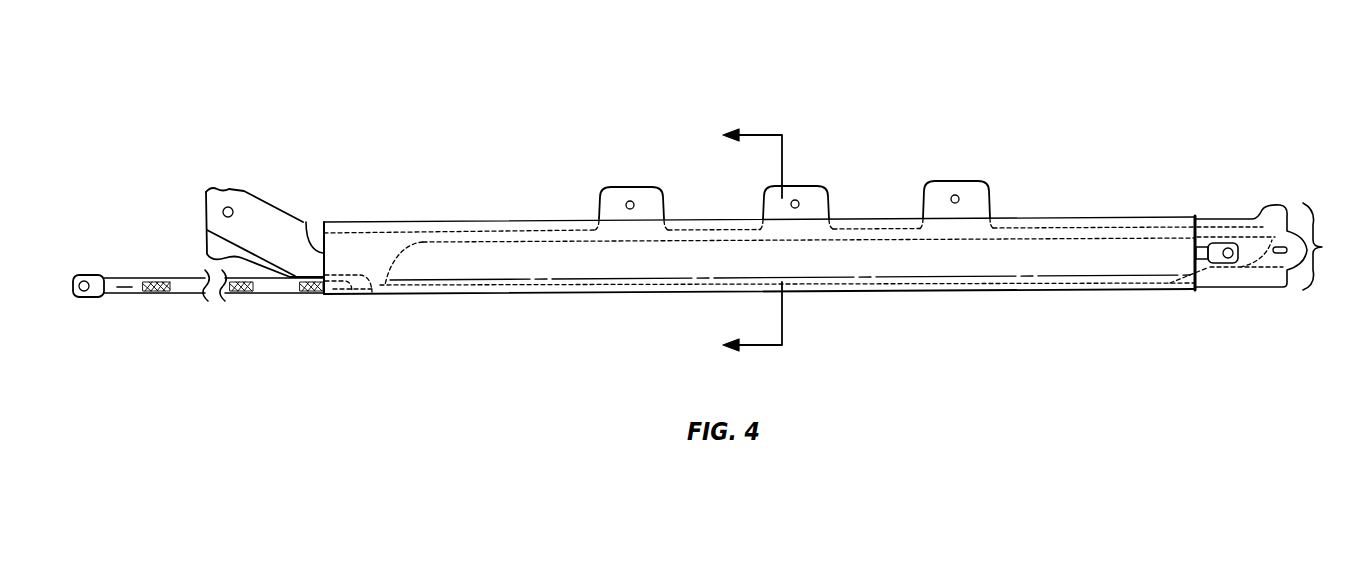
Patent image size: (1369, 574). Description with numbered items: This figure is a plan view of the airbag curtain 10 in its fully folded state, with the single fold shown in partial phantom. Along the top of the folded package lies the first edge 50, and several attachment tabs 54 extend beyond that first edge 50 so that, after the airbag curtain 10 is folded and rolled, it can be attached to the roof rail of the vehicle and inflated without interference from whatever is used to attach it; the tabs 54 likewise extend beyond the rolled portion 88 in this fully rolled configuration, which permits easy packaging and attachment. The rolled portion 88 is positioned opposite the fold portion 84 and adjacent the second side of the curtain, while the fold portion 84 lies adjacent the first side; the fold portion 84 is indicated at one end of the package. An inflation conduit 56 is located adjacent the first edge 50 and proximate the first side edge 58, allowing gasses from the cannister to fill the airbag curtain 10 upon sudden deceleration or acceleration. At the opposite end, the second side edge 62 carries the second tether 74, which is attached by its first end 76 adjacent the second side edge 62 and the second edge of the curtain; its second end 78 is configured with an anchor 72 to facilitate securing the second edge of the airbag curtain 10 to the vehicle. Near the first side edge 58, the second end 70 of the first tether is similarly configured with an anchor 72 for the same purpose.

The airbag curtain 10 is at (1083, 133).
The first edge 50 is at (1060, 216).
The attachment tabs 54 is at (236, 205).
The inflation conduit 56 is at (1288, 290).
The first side edge 58 is at (1213, 225).
The second side edge 62 is at (306, 222).
The second end of first tether 70 is at (1210, 288).
The anchor 72 is at (88, 275).
The second tether 74 is at (178, 293).
The first end of second tether 76 is at (315, 293).
The second end of second tether 78 is at (115, 297).
The fold portion 84 is at (1327, 246).
The rolled portion 88 is at (927, 267).